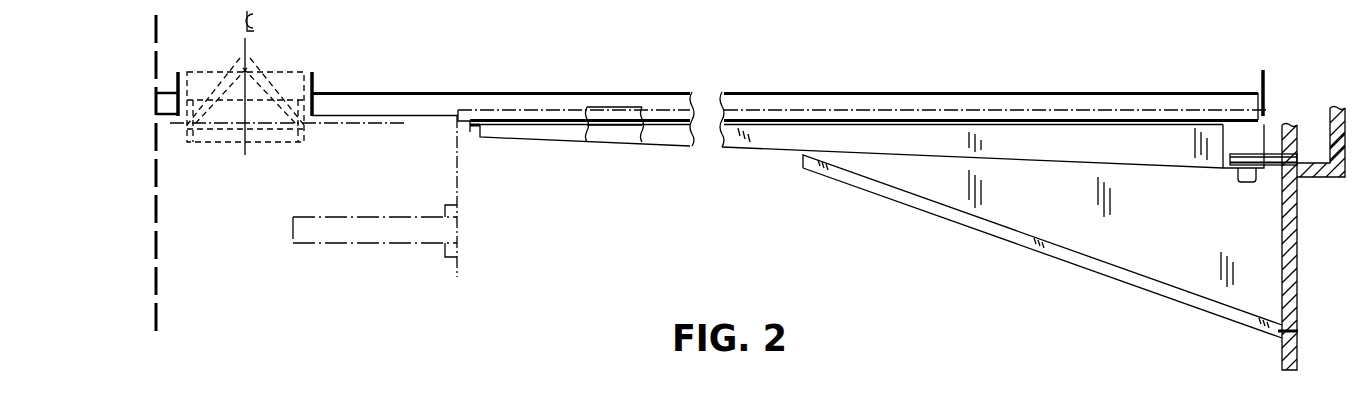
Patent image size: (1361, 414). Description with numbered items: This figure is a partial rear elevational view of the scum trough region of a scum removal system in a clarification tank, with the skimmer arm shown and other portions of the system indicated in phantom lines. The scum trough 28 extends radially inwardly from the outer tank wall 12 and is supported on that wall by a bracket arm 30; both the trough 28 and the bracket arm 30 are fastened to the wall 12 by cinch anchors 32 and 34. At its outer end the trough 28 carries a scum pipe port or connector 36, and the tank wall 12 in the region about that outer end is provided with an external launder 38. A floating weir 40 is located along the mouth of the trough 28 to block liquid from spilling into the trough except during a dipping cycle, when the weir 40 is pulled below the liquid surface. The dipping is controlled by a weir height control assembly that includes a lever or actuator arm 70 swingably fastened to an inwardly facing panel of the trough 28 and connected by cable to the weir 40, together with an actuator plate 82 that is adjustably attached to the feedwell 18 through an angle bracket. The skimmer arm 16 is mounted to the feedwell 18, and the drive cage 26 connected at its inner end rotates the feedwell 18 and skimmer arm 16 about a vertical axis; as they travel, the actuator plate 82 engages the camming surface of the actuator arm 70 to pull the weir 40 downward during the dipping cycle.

The outer tank wall 12 is at (1297, 256).
The skimmer arm 16 is at (1055, 93).
The feedwell 18 is at (457, 192).
The drive cage 26 is at (270, 55).
The scum trough 28 is at (1080, 156).
The bracket arm 30 is at (1067, 254).
The cinch anchor 32 is at (1299, 173).
The cinch anchor 34 is at (1297, 340).
The scum pipe port or connector 36 is at (1257, 181).
The external launder 38 is at (1331, 109).
The floating weir 40 is at (887, 119).
The lever or actuator arm 70 is at (466, 134).
The actuator plate 82 is at (459, 110).